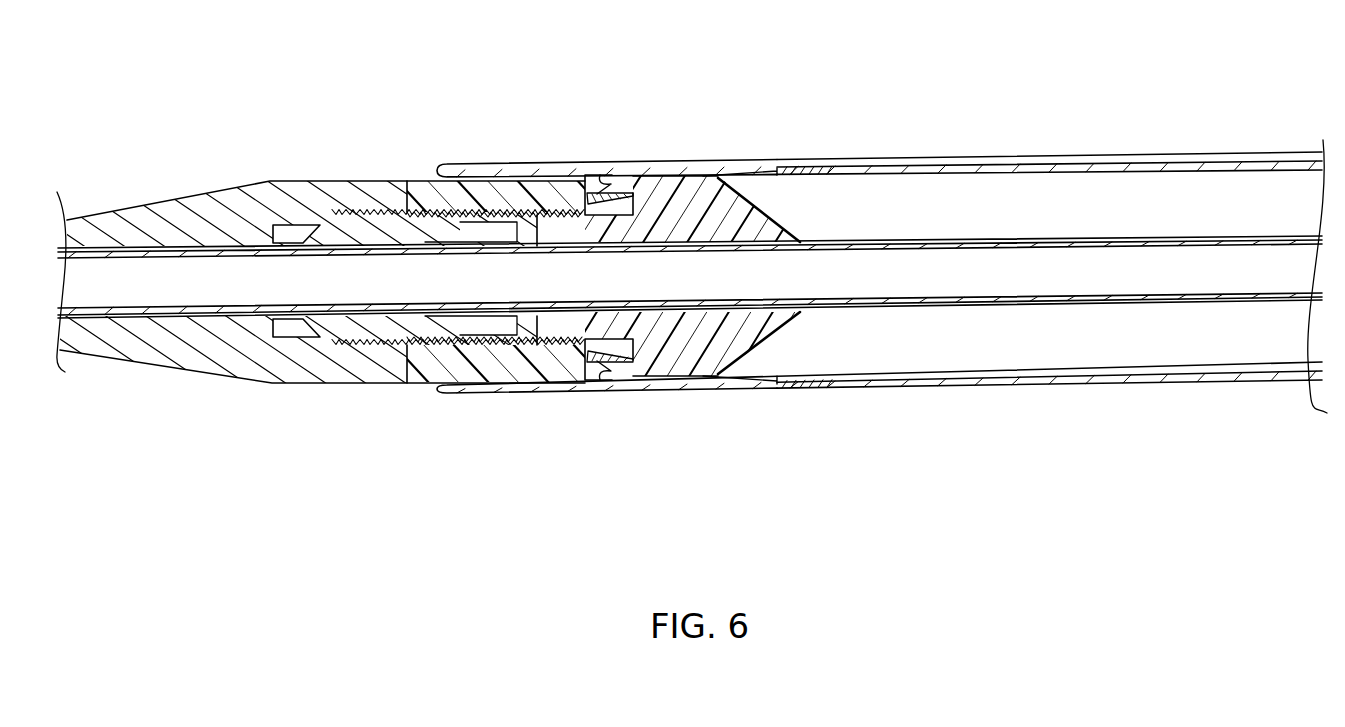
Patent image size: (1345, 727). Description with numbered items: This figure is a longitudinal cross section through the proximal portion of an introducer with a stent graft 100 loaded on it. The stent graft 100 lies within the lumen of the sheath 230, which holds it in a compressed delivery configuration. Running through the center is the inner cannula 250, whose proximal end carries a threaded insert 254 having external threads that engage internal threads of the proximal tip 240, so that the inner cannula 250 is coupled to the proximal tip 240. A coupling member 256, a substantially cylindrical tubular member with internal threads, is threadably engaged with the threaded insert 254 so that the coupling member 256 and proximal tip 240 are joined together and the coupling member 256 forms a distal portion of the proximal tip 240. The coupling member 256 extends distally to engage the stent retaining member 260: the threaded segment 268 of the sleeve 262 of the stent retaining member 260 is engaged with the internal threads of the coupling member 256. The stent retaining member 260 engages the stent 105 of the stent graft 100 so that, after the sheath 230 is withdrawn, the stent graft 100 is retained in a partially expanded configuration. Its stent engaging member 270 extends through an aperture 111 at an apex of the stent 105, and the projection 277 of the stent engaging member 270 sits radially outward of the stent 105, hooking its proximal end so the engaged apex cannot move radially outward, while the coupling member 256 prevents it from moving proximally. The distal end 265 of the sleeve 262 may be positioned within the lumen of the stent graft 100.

The proximal tip 240 is at (160, 212).
The threaded insert 254 is at (297, 233).
The coupling member 256 is at (422, 193).
The sheath 230 is at (478, 165).
The stent 105 is at (593, 177).
The projection 277 is at (605, 180).
The stent engaging member 270 is at (677, 198).
The aperture 111 is at (757, 180).
The distal end 265 is at (800, 239).
The stent graft 100 is at (935, 168).
The inner cannula 250 is at (1082, 238).
The threaded segment 268 is at (553, 342).
The sleeve 262 is at (598, 320).
The stent retaining member 260 is at (760, 362).